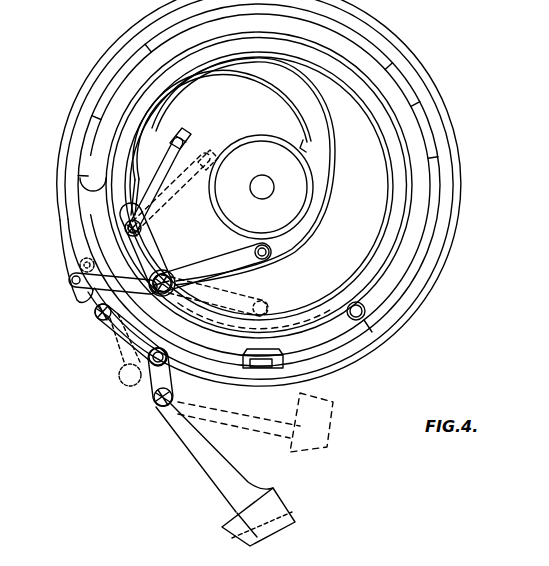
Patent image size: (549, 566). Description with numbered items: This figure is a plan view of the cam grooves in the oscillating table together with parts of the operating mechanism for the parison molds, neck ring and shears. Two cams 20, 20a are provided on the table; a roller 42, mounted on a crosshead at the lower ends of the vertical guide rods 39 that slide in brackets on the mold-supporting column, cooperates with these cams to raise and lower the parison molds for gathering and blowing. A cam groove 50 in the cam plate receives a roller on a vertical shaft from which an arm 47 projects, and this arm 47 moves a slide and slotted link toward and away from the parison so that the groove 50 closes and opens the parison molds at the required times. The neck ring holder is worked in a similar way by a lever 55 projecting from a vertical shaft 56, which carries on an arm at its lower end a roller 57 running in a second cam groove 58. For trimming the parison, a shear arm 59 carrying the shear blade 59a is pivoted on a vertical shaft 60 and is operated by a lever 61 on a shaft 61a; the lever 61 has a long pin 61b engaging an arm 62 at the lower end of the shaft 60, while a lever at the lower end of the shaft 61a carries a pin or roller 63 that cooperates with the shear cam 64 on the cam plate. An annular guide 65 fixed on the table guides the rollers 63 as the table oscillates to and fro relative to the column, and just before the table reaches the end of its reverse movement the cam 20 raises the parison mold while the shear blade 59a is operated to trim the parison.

The cam 20 is at (402, 87).
The cam 20a is at (232, 352).
The vertical guide rods 39 is at (366, 312).
The roller 42 is at (267, 364).
The arm 47 is at (228, 258).
The cam groove 50 is at (302, 230).
The lever 55 is at (190, 152).
The vertical shaft 56 is at (143, 225).
The roller 57 is at (150, 288).
The cam groove 58 is at (155, 88).
The shear arm 59 is at (200, 458).
The shear blade 59a is at (237, 532).
The vertical shaft 60 is at (157, 404).
The lever 61 is at (126, 336).
The shaft 61a is at (98, 317).
The long pin 61b is at (156, 360).
The arm 62 is at (173, 382).
The pin or roller 63 is at (72, 282).
The cam 64 is at (82, 265).
The annular guide 65 is at (70, 233).